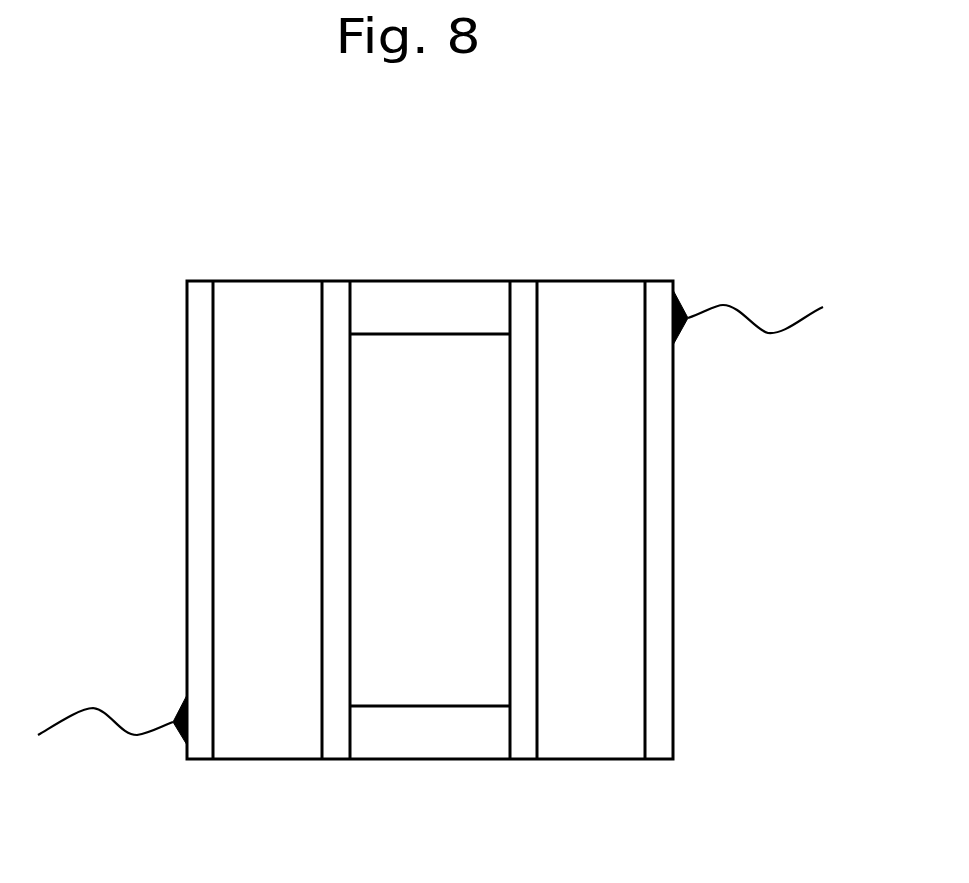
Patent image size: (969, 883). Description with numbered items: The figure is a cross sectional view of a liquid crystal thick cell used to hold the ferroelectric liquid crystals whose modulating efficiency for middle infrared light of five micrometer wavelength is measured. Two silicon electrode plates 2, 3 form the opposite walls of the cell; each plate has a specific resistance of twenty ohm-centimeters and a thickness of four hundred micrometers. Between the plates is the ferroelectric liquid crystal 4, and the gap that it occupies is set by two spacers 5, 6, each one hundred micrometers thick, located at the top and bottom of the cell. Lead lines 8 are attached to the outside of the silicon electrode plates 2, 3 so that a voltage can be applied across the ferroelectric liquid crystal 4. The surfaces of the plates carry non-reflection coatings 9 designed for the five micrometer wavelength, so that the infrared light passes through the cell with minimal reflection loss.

The silicon electrode plate 2 is at (605, 492).
The silicon electrode plate 3 is at (255, 492).
The ferroelectric liquid crystal 4 is at (443, 612).
The spacer 5 is at (430, 304).
The spacer 6 is at (445, 736).
The lead line 8 is at (757, 322).
The non-reflection coating 9 is at (200, 292).